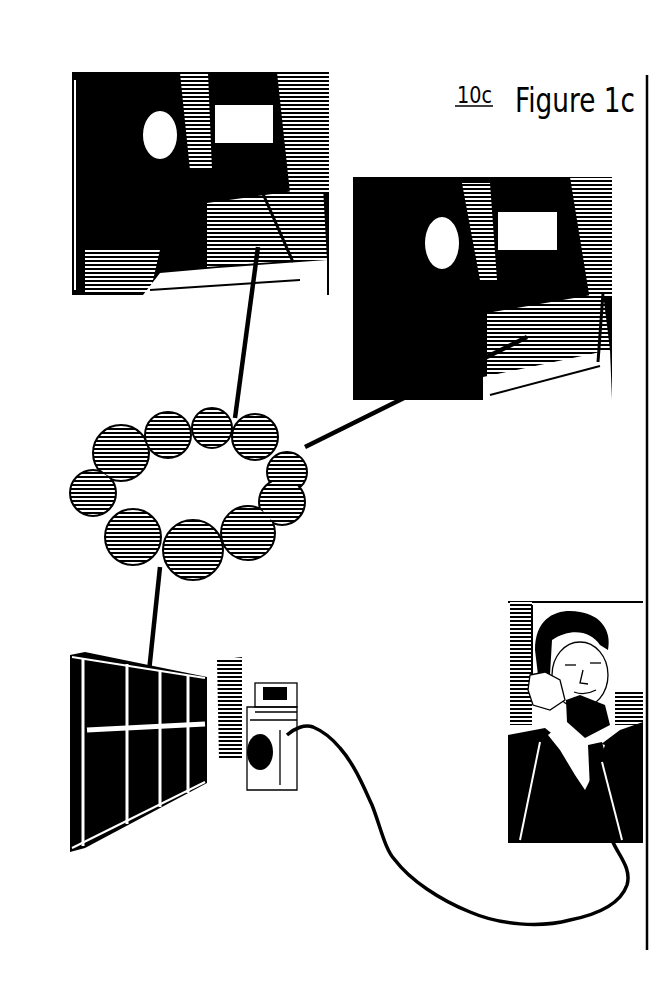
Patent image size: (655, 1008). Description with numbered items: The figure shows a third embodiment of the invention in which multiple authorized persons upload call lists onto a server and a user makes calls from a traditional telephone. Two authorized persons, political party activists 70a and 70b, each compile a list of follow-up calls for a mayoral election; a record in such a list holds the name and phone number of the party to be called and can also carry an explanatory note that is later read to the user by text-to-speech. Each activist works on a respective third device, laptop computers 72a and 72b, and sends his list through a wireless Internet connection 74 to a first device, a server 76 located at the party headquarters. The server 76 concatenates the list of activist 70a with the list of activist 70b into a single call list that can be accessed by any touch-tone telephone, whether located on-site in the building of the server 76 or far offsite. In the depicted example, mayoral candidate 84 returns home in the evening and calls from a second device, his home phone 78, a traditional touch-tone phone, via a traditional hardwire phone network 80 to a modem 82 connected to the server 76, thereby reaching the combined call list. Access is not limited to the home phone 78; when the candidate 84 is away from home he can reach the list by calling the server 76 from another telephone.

The political party activist 70a is at (200, 183).
The political party activist 70b is at (482, 288).
The laptop computer 72a is at (328, 187).
The laptop computer 72b is at (484, 397).
The wireless Internet connection 74 is at (192, 413).
The server 76 is at (103, 810).
The home phone 78 is at (512, 685).
The hardwire phone network 80 is at (393, 858).
The modem 82 is at (274, 783).
The mayoral candidate 84 is at (502, 742).